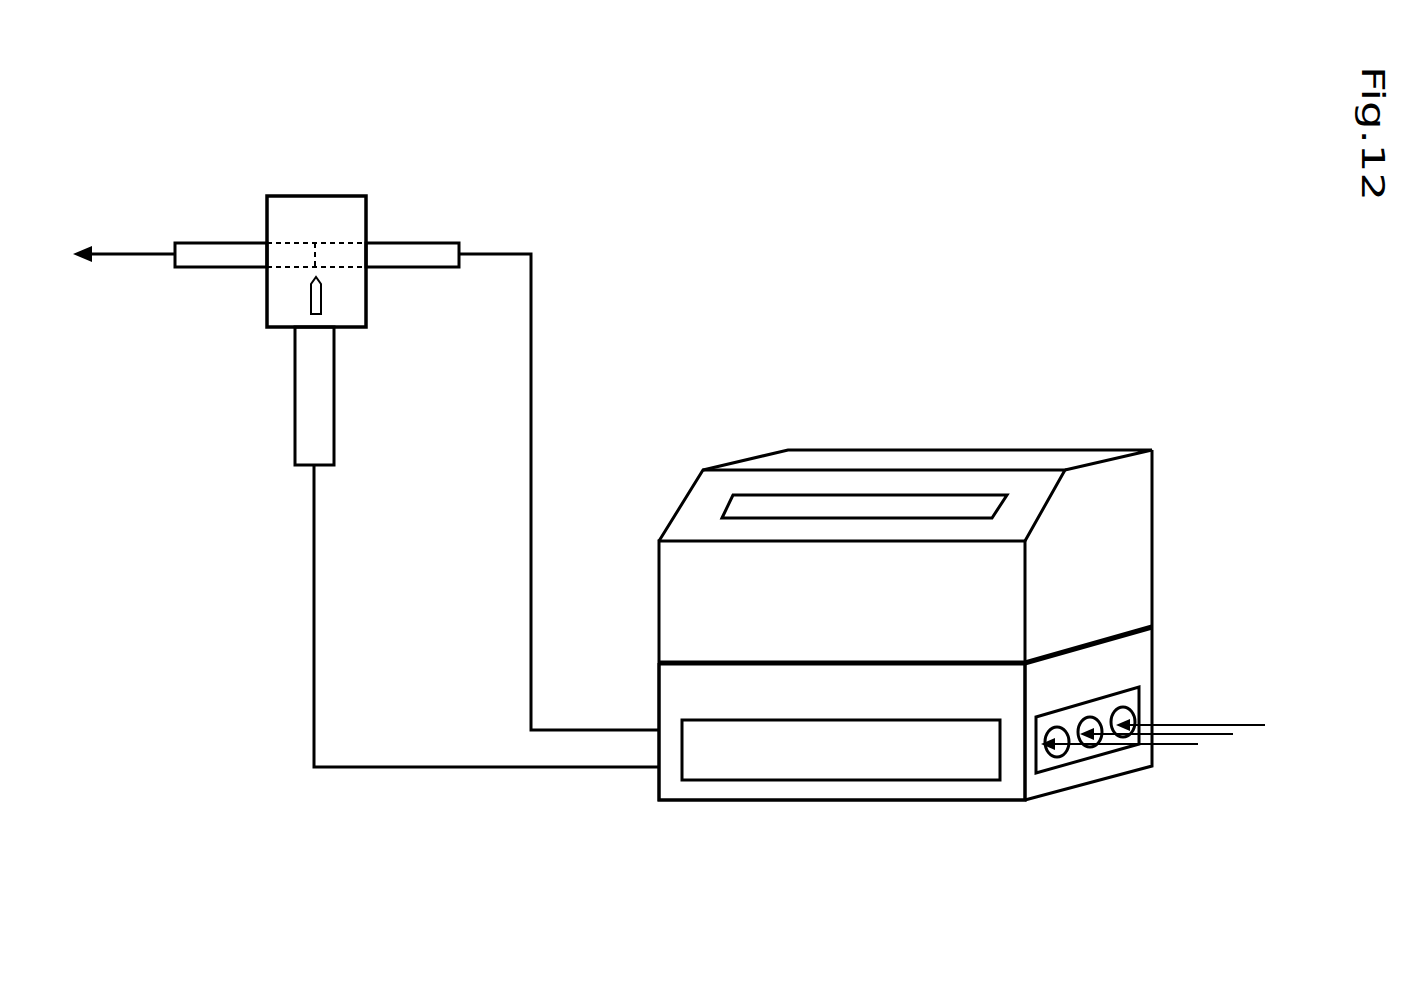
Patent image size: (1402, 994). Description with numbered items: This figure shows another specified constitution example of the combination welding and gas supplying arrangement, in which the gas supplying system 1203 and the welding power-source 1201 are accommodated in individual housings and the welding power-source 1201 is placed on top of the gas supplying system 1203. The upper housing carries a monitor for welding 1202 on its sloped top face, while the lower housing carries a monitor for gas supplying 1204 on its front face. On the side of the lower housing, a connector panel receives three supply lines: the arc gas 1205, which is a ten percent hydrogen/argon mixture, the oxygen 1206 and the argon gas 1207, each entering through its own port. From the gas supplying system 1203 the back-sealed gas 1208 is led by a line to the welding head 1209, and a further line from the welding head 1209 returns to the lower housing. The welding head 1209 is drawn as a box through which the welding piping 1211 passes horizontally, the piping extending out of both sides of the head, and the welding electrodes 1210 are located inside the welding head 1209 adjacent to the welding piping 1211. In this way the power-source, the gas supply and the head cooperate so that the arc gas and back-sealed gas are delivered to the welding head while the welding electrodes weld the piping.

The welding power-source 1201 is at (1133, 491).
The monitor for welding 1202 is at (832, 510).
The gas supplying system 1203 is at (975, 789).
The monitor for gas supplying 1204 is at (770, 757).
The arc gas (10% hydrogen/argon gas) 1205 is at (313, 692).
The oxygen 1206 is at (1212, 737).
The argon gas 1207 is at (1177, 747).
The back-sealed gas 1208 is at (531, 354).
The welding head 1209 is at (323, 203).
The welding electrodes 1210 is at (308, 297).
The welding piping 1211 is at (207, 255).